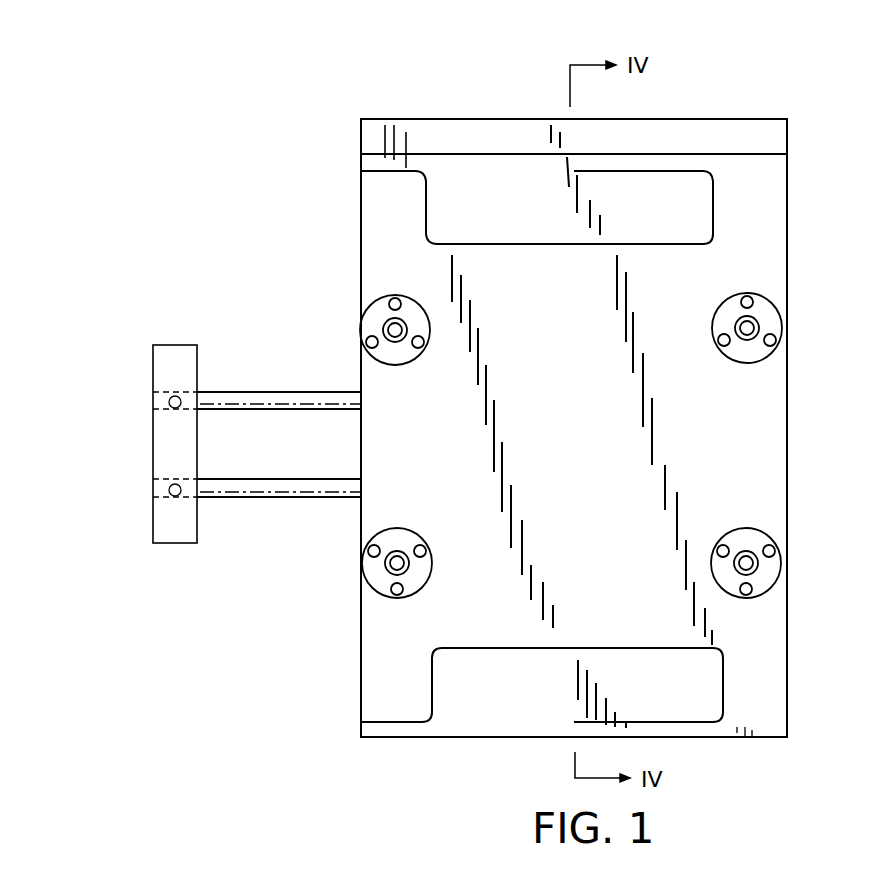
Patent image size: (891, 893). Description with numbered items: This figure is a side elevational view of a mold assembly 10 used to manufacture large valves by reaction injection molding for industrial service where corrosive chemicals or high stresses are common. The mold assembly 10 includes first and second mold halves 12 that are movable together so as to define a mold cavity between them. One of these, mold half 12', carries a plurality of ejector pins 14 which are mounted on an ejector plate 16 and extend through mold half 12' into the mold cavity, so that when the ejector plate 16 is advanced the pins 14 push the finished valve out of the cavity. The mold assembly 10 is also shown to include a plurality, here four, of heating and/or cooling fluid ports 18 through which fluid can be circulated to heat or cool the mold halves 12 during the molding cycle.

The mold assembly 10 is at (800, 118).
The mold halves 12 is at (599, 445).
The mold half 12' is at (465, 426).
The ejector pins 14 is at (242, 393).
The ejector plate 16 is at (197, 346).
The heating and/or cooling fluid ports 18 is at (760, 333).